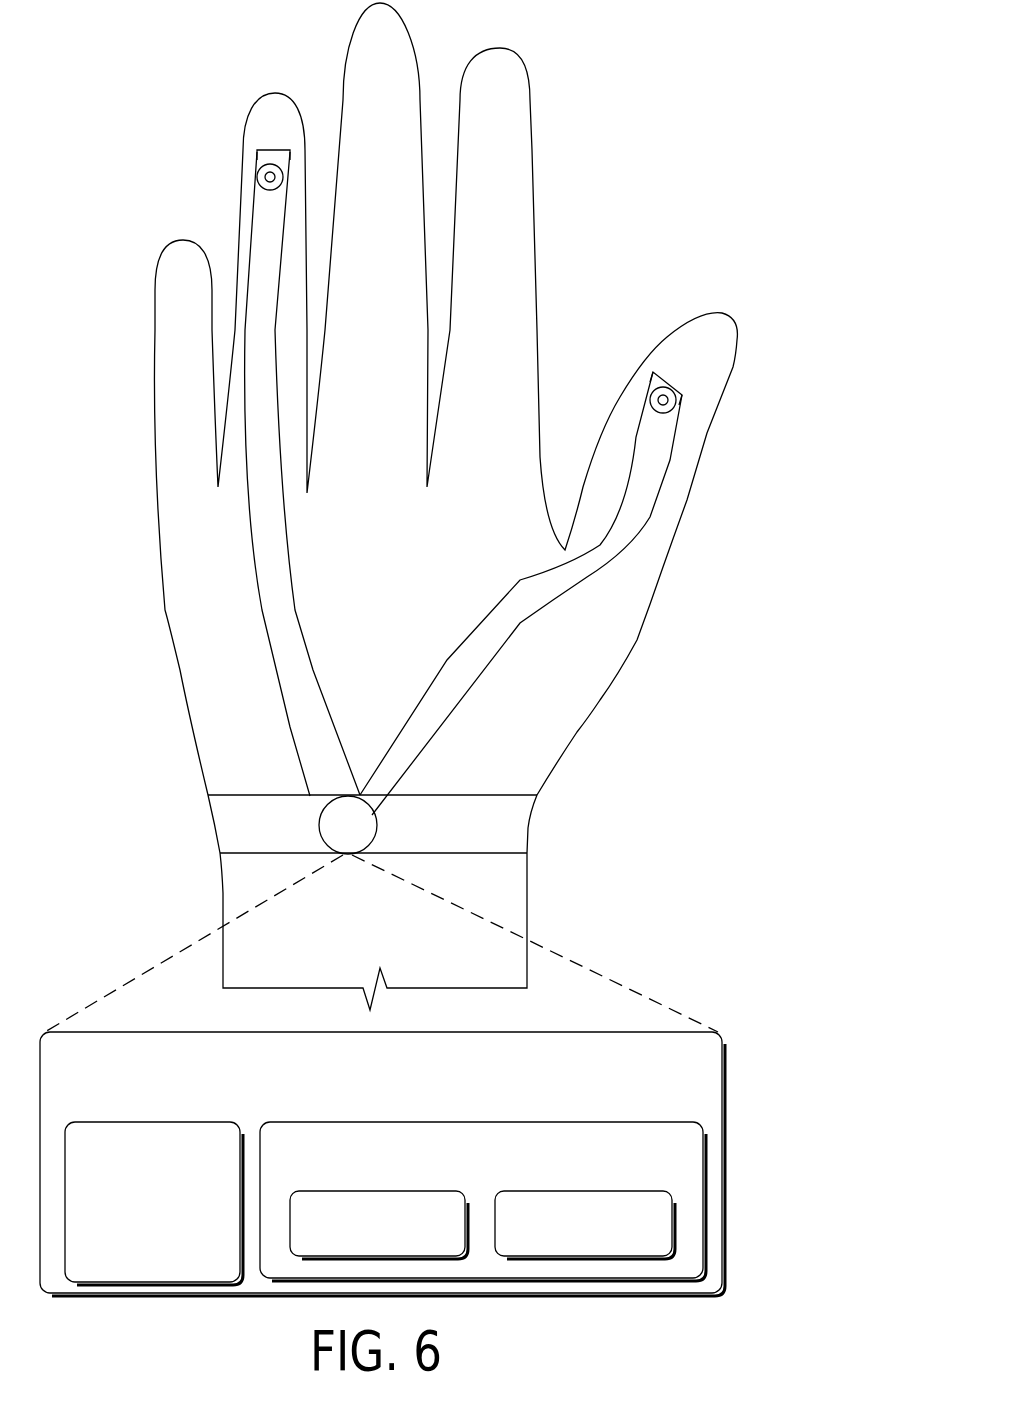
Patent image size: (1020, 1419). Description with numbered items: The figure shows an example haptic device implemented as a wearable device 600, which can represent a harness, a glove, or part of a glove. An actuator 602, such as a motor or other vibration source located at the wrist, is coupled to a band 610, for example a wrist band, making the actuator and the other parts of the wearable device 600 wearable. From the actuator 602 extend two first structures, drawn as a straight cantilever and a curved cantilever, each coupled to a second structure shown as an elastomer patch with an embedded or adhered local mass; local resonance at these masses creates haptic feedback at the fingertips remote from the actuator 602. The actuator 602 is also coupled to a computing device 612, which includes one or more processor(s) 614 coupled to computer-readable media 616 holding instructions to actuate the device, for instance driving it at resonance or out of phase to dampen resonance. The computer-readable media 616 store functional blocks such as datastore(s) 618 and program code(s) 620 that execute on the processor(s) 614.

The wearable device 600 is at (625, 53).
The actuator 602 is at (343, 855).
The band 610 is at (530, 830).
The computing device 612 is at (363, 1094).
The processor(s) 614 is at (133, 1227).
The computer-readable media 616 is at (462, 1184).
The datastore(s) 618 is at (358, 1237).
The program code(s) 620 is at (562, 1237).